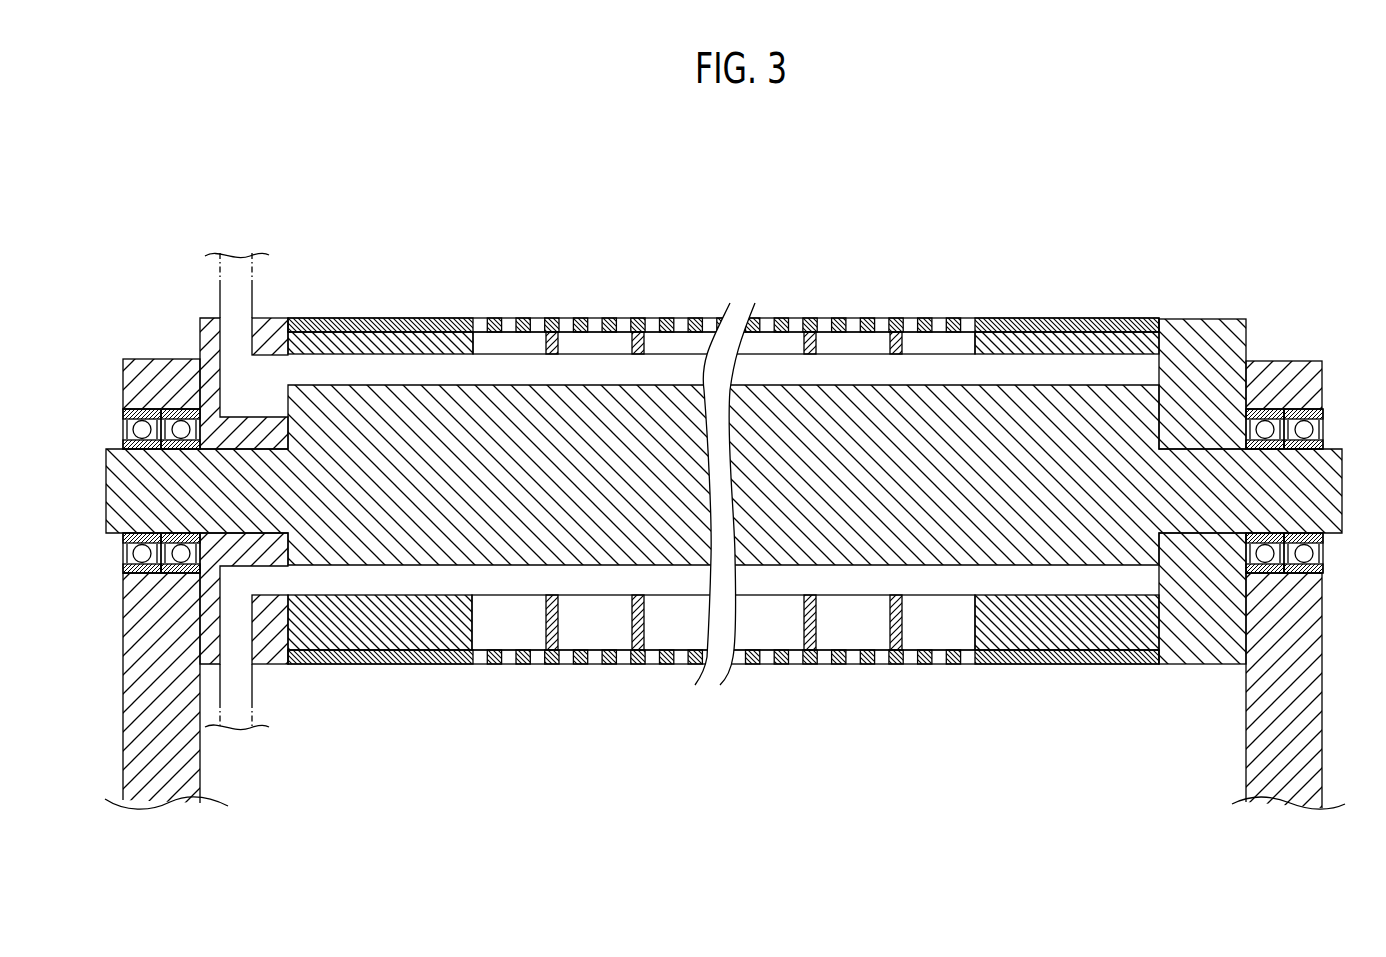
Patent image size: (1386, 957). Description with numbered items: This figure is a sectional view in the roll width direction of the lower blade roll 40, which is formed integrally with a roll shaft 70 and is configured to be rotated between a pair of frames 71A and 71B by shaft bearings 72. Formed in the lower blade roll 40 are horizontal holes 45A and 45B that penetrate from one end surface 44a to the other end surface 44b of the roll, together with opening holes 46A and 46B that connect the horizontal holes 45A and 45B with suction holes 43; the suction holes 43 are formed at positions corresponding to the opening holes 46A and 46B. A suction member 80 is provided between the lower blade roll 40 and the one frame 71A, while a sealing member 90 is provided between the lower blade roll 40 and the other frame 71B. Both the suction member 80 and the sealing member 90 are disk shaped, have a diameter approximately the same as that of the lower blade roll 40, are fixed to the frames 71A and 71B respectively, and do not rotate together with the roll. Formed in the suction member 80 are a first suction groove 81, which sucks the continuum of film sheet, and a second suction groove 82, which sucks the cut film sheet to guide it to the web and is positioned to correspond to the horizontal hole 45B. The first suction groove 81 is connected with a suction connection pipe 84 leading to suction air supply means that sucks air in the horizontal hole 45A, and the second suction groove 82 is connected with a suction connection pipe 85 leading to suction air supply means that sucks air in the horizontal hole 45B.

The lower blade roll 40 is at (1120, 169).
The suction holes 43 is at (505, 322).
The one end surface 44a is at (272, 320).
The other end surface 44b is at (1163, 343).
The horizontal hole 45A is at (402, 368).
The horizontal hole 45B is at (437, 578).
The opening hole 46A is at (570, 347).
The opening hole 46B is at (603, 640).
The roll shaft 70 is at (845, 515).
The frame 71A is at (160, 785).
The frame 71B is at (1290, 785).
The shaft bearings 72 is at (135, 428).
The suction member 80 is at (183, 343).
The first suction groove 81 is at (240, 320).
The second suction groove 82 is at (237, 650).
The suction connection pipe 84 is at (237, 268).
The suction connection pipe 85 is at (238, 718).
The sealing member 90 is at (1260, 340).